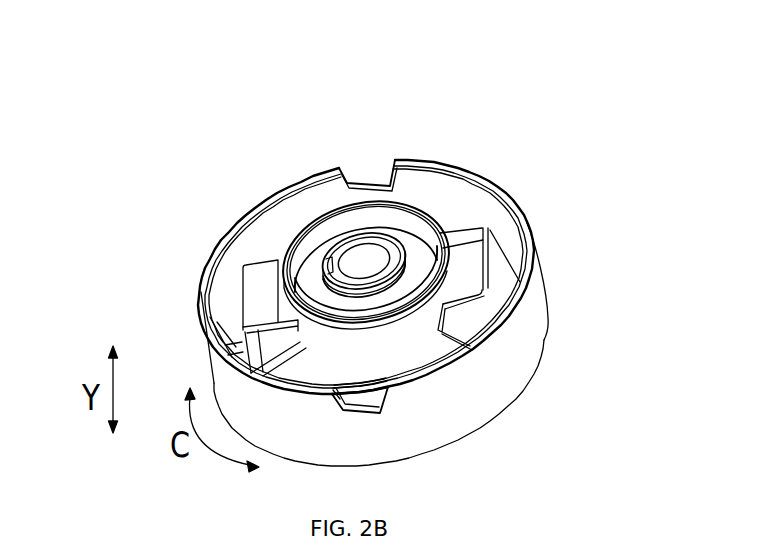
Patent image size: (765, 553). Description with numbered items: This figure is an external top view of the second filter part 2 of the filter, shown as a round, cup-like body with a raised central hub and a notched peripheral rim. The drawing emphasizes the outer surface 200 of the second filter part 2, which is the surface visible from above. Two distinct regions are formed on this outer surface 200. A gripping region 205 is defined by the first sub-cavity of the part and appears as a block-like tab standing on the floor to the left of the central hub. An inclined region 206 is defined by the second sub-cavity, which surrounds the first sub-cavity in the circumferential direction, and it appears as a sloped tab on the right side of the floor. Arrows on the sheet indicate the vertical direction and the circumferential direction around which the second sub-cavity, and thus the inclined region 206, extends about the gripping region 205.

The second filter part 2 is at (465, 114).
The outer surface 200 is at (315, 194).
The gripping region 205 is at (263, 290).
The inclined region 206 is at (438, 353).